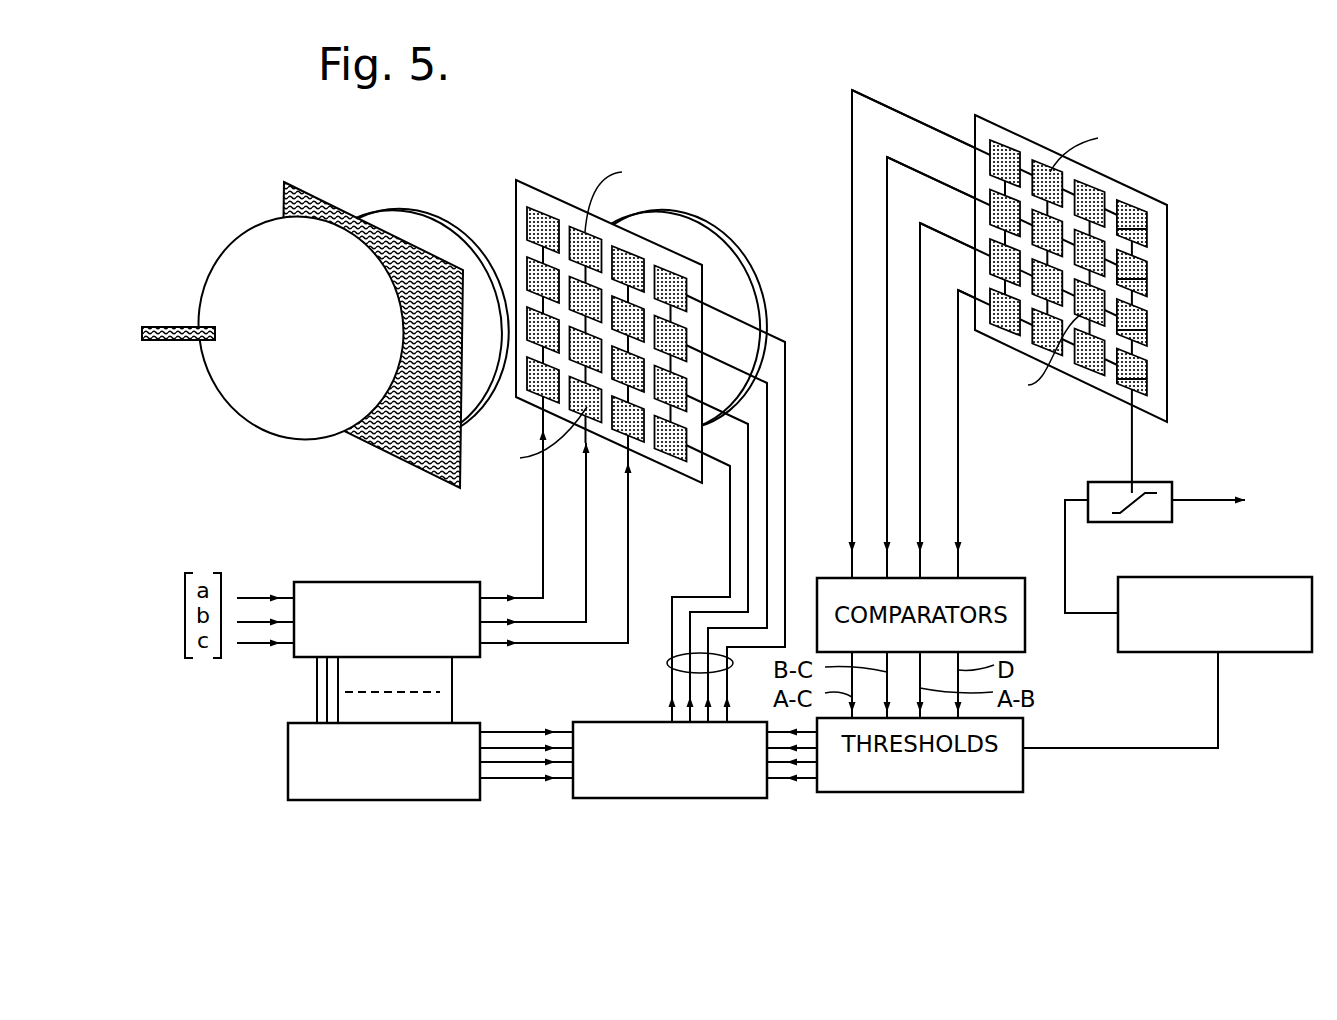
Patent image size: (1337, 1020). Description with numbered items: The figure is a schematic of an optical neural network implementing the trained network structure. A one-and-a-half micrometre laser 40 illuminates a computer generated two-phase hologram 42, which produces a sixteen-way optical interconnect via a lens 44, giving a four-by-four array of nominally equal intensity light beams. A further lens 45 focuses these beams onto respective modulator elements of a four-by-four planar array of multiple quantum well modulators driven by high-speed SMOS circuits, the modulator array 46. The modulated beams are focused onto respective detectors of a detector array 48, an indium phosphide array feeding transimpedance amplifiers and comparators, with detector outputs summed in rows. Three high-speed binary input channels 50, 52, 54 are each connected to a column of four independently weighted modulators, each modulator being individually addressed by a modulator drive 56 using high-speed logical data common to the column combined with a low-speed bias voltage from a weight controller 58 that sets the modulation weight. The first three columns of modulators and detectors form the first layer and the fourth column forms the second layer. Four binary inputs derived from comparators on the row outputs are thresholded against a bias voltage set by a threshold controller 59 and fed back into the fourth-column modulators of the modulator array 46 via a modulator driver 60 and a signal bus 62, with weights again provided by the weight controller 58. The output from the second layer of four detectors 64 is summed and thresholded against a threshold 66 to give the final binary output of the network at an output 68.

The laser 40 is at (178, 343).
The computer generated two-phase hologram 42 is at (397, 455).
The lens 44 is at (263, 405).
The further lens 45 is at (410, 217).
The modulator array 46 is at (528, 192).
The detector array 48 is at (1000, 133).
The binary input channel 50 is at (543, 488).
The binary input channel 52 is at (586, 510).
The binary input channel 54 is at (628, 525).
The modulator drive 56 is at (322, 582).
The weight controller 58 is at (295, 745).
The threshold controller 59 is at (1200, 648).
The modulator driver 60 is at (593, 724).
The signal bus 62 is at (665, 664).
The second layer detectors 64 is at (1145, 275).
The threshold 66 is at (1105, 483).
The output 68 is at (1188, 498).